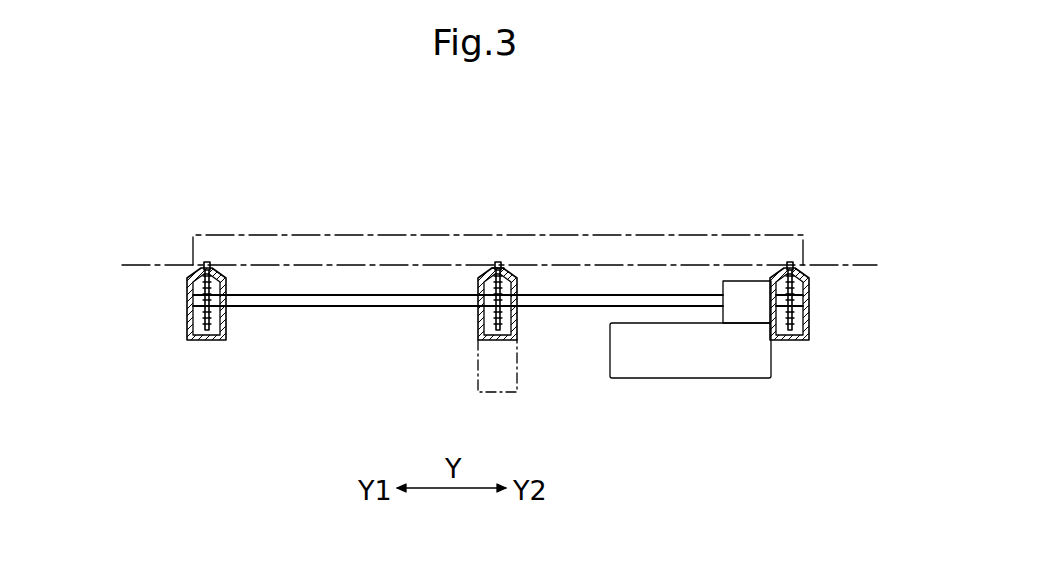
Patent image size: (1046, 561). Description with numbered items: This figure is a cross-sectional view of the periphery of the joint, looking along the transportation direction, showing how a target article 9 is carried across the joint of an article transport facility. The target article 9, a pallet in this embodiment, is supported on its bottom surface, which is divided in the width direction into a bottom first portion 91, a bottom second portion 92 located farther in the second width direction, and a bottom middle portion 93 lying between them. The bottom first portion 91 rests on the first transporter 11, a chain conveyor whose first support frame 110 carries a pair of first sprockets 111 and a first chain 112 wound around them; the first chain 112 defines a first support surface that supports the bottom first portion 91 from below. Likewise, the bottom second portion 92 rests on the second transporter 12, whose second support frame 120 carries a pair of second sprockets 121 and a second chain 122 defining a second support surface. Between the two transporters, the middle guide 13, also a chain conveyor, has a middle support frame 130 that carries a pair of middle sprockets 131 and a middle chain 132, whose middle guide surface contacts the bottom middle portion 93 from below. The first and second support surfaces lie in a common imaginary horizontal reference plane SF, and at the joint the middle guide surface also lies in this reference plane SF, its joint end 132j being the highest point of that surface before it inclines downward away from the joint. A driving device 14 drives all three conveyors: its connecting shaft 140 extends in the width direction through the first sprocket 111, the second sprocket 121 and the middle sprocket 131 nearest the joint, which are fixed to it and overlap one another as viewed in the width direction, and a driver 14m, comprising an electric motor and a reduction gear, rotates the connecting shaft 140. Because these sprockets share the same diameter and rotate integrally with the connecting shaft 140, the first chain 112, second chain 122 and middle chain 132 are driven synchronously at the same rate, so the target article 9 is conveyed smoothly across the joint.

The target article 9 is at (733, 229).
The reference plane SF is at (845, 265).
The first transporter 11 is at (153, 304).
The first support frame 110 is at (187, 323).
The first sprocket 111 is at (214, 320).
The first chain 112 is at (206, 263).
The second transporter 12 is at (839, 301).
The second support frame 120 is at (808, 327).
The second sprocket 121 is at (781, 320).
The second chain 122 is at (850, 226).
The middle guide 13 is at (538, 293).
The middle support frame 130 is at (517, 283).
The middle sprocket 131 is at (494, 308).
The middle chain 132 is at (500, 262).
The joint end 132j is at (511, 259).
The driving device 14 is at (669, 395).
The driver 14m is at (645, 380).
The connecting shaft 140 is at (407, 294).
The bottom first portion 91 is at (234, 274).
The bottom second portion 92 is at (773, 268).
The bottom middle portion 93 is at (484, 268).